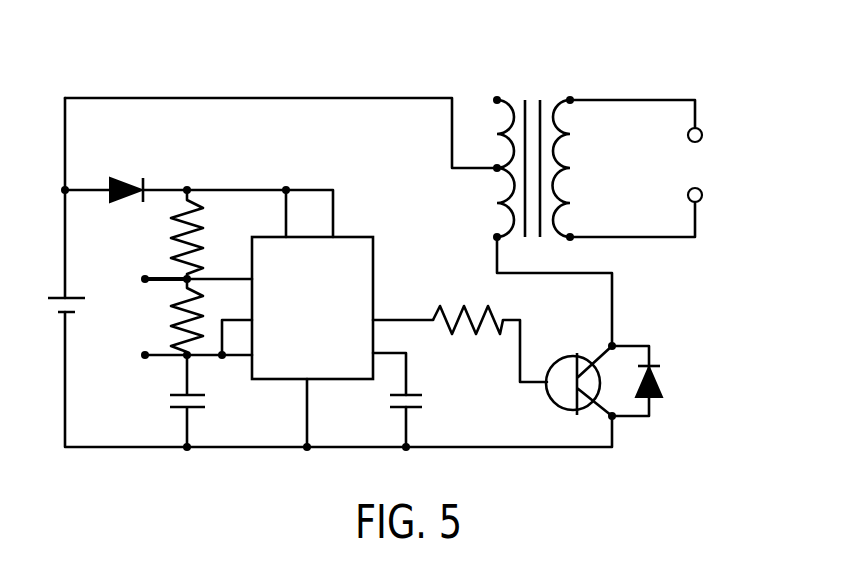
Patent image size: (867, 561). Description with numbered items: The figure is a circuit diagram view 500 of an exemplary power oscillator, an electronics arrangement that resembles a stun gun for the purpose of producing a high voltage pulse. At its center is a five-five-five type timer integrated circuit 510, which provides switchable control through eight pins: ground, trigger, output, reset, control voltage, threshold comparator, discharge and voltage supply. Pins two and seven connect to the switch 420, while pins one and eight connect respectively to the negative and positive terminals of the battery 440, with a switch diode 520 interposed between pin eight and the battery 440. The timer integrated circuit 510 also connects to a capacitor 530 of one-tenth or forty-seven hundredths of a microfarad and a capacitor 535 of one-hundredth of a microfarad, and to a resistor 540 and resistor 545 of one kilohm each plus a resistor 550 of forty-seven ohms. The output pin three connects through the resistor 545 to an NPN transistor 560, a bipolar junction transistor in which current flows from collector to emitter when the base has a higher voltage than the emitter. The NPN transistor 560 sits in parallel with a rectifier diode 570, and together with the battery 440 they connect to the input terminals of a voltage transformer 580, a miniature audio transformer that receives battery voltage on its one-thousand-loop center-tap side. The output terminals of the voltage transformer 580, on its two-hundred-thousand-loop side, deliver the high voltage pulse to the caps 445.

The circuit diagram view 500 is at (745, 113).
The battery 440 is at (60, 296).
The caps 445 is at (716, 133).
The switch 420 is at (140, 277).
The timer integrated circuit 510 is at (320, 297).
The switch diode 520 is at (134, 184).
The capacitor 530 is at (170, 406).
The capacitor 535 is at (392, 407).
The resistor 540 is at (174, 330).
The resistor 545 is at (463, 312).
The resistor 550 is at (174, 244).
The NPN transistor 560 is at (577, 352).
The rectifier diode 570 is at (662, 384).
The voltage transformer 580 is at (537, 110).